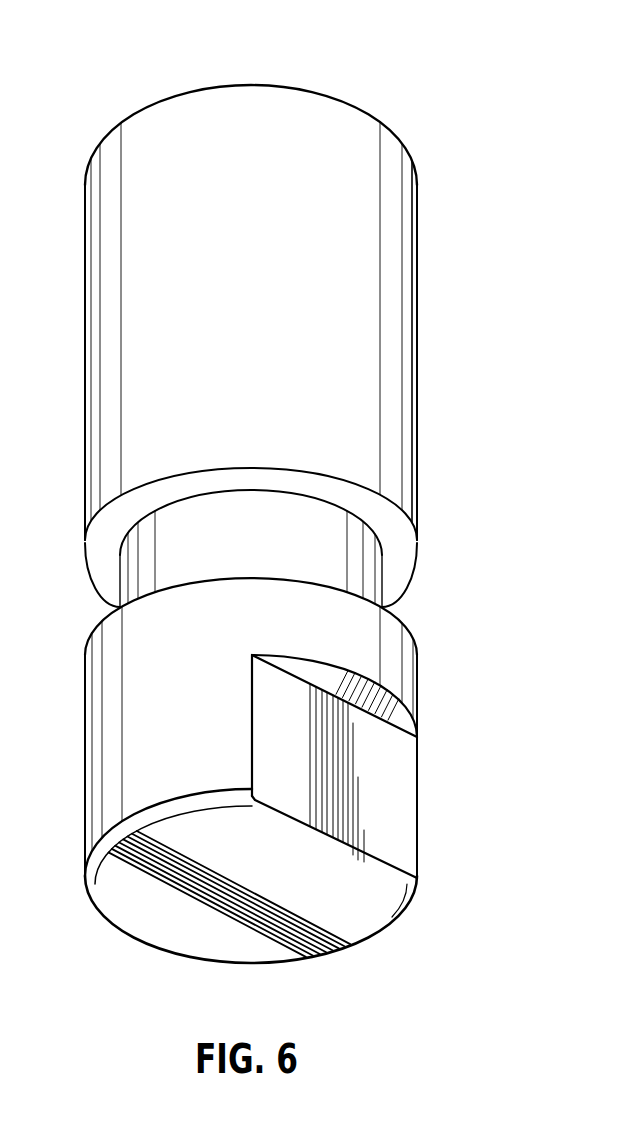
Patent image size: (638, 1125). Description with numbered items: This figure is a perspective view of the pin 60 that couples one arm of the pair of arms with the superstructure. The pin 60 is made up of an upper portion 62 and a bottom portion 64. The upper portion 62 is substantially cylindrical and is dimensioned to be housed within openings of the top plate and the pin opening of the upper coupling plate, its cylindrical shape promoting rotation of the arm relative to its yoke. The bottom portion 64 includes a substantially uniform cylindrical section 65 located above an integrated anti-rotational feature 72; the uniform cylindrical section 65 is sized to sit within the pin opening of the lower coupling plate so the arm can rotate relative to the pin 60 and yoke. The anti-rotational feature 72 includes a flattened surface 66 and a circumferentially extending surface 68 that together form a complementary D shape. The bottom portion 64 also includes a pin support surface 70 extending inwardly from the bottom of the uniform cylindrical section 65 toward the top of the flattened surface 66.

The pin 60 is at (299, 490).
The upper portion 62 is at (358, 314).
The bottom portion 64 is at (117, 735).
The uniform cylindrical section 65 is at (392, 655).
The flattened surface 66 is at (380, 863).
The circumferentially extending surface 68 is at (163, 806).
The pin support surface 70 is at (383, 708).
The anti-rotational feature 72 is at (522, 700).